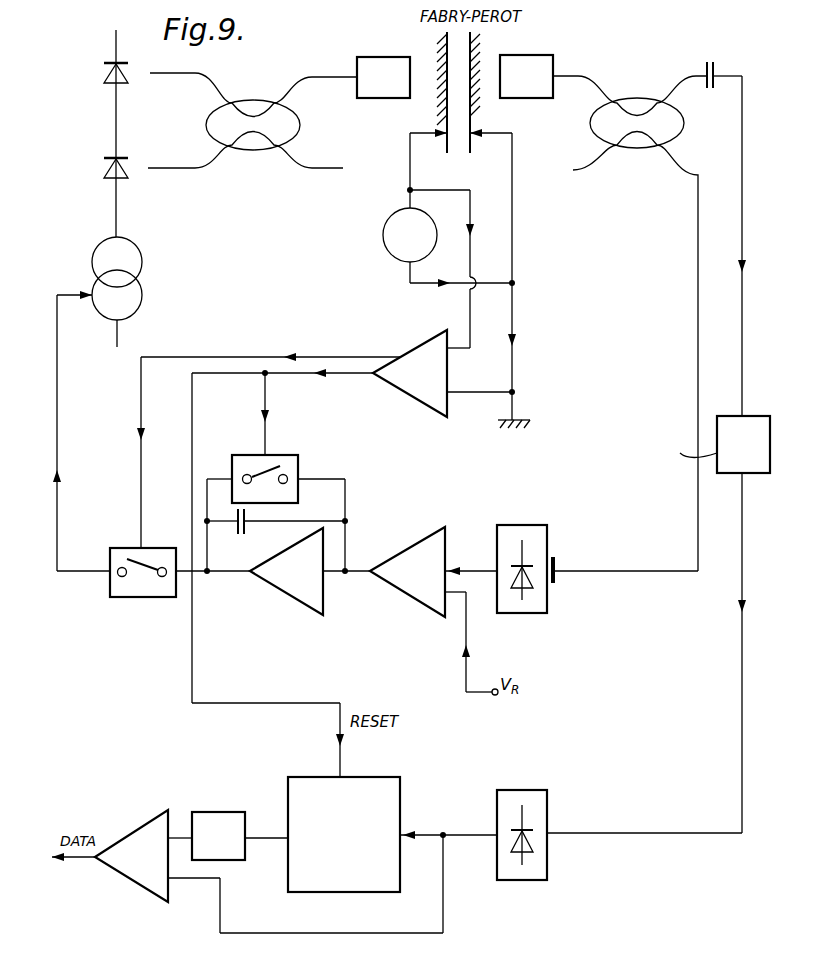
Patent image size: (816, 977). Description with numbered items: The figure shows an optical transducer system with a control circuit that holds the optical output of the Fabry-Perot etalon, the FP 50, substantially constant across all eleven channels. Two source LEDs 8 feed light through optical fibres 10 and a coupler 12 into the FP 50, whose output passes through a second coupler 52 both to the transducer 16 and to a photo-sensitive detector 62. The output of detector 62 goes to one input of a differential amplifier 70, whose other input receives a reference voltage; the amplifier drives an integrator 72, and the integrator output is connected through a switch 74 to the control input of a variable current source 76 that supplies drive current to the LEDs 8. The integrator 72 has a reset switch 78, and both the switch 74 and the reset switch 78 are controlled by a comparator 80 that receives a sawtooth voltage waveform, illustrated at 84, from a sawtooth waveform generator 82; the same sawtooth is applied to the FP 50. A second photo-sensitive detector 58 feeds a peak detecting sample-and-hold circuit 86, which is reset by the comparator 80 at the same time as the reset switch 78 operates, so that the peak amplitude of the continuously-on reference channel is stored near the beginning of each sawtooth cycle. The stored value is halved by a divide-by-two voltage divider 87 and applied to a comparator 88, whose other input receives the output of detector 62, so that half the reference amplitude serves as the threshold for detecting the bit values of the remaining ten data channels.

The source LED 8 is at (107, 87).
The optical fibre 10 is at (195, 75).
The coupler 12 is at (247, 98).
The transducer 16 is at (730, 417).
The FP (Fabry-Perot etalon) 50 is at (352, 61).
The coupler 52 is at (636, 100).
The photo-sensitive detector 58 is at (549, 869).
The photo-sensitive detector 62 is at (548, 598).
The differential amplifier 70 is at (433, 537).
The integrator 72 is at (268, 562).
The switch 74 is at (125, 548).
The variable current source 76 is at (96, 259).
The reset switch 78 is at (300, 470).
The comparator 80 is at (417, 352).
The sawtooth waveform generator 82 is at (387, 251).
The sawtooth waveform 84 is at (419, 130).
The peak detecting sample-and-hold circuit 86 is at (391, 805).
The divide-by-two voltage divider 87 is at (229, 816).
The comparator 88 is at (152, 823).